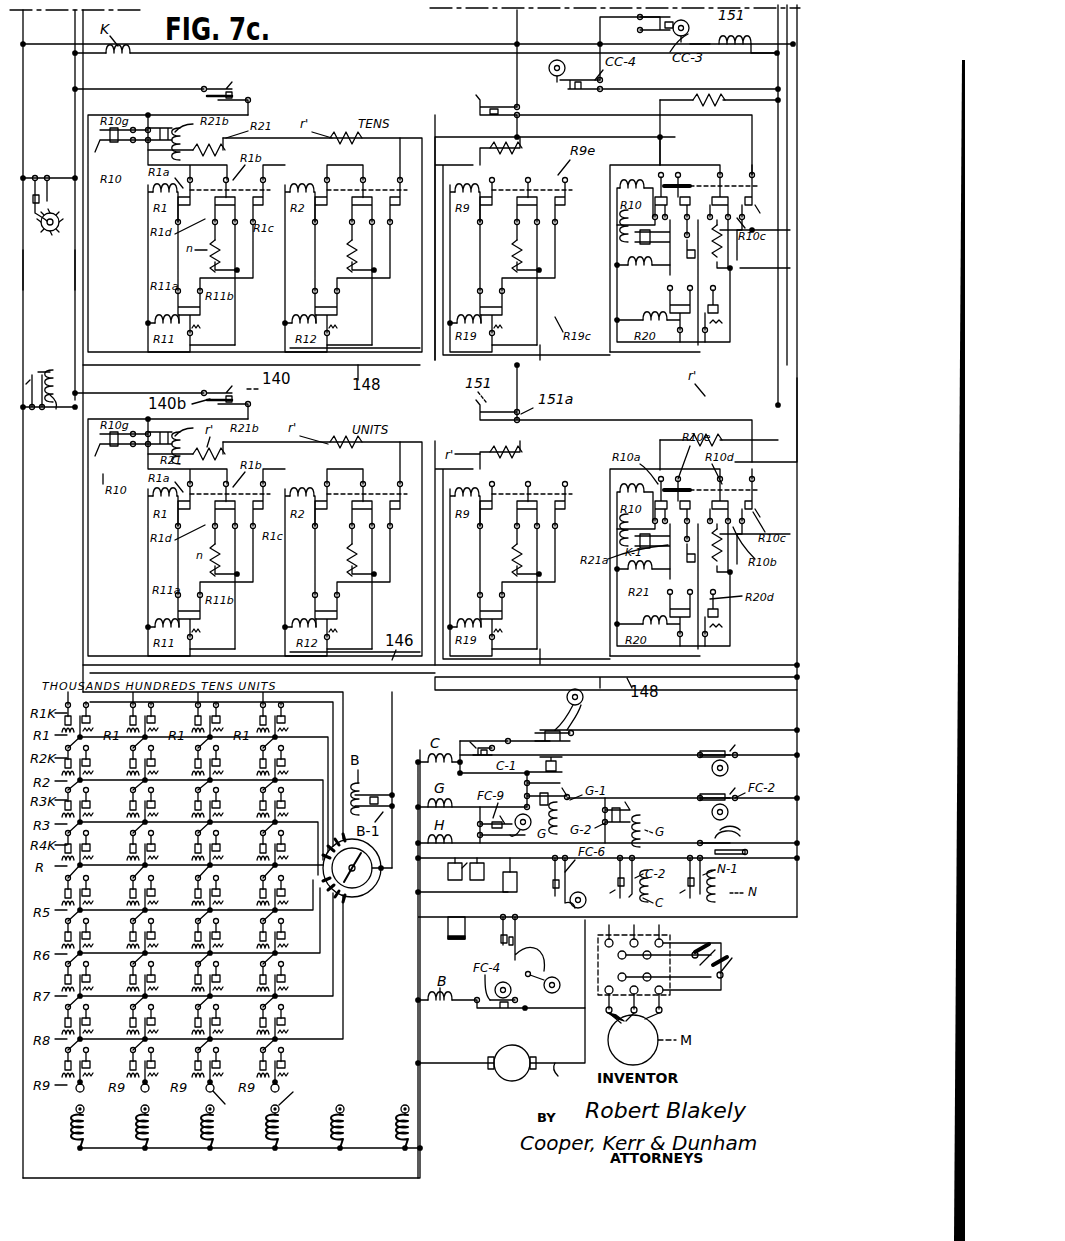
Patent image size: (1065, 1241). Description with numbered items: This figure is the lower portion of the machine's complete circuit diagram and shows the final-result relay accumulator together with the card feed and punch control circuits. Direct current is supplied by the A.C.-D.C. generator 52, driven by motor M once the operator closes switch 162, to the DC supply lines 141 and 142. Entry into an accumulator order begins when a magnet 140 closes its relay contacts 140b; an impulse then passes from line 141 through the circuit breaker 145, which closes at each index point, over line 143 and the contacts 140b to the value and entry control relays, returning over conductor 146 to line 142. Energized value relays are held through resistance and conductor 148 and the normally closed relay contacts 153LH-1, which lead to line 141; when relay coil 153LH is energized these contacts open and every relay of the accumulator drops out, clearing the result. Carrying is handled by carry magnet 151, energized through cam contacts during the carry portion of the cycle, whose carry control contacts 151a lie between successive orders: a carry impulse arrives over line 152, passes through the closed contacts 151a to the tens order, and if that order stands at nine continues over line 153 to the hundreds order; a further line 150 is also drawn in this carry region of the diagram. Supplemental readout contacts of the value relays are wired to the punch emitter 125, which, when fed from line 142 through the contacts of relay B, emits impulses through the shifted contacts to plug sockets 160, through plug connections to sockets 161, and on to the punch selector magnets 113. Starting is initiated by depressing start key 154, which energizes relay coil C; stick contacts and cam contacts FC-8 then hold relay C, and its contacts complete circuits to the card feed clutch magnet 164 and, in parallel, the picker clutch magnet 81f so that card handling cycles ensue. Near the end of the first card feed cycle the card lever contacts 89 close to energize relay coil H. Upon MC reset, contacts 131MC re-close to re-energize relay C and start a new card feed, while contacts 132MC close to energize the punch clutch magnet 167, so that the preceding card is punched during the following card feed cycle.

The magnet 140 is at (247, 85).
The relay contacts 140b is at (210, 95).
The circuit breaker 145 is at (42, 175).
The conductor 148 is at (80, 232).
The DC supply line 141 is at (24, 268).
The line 143 is at (75, 267).
The relay coil 153LH is at (50, 368).
The relay contacts 153LH-1 is at (54, 417).
The line 153 is at (517, 25).
The carry magnet 151 is at (480, 100).
The carry control contacts 151a is at (521, 112).
The conductor 150 is at (778, 380).
The line 152 is at (795, 413).
The conductor 146 is at (392, 356).
The punch emitter 125 is at (372, 885).
The MC reset contacts 131MC is at (571, 733).
The start key 154 is at (560, 782).
The cam contacts FC-8 is at (735, 755).
The card lever contacts 89 is at (745, 840).
The card feed clutch magnet 164 is at (478, 870).
The picker clutch magnet 81f is at (503, 885).
The punch clutch magnet 167 is at (454, 935).
The MC reset contacts 132MC is at (515, 935).
The A.C.-D.C. generator 52 is at (508, 1077).
The DC supply line 142 is at (569, 1073).
The switch 162 is at (730, 977).
The plug sockets 160 is at (274, 1090).
The plug sockets 161 is at (340, 1107).
The punch selector magnets 113 is at (217, 1138).